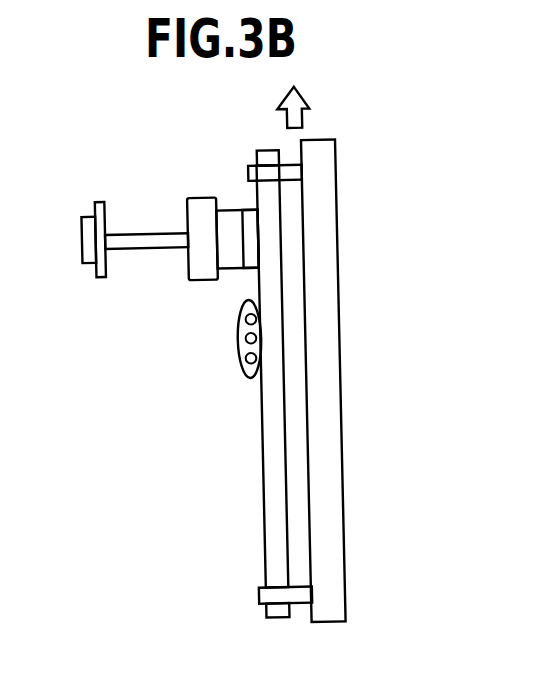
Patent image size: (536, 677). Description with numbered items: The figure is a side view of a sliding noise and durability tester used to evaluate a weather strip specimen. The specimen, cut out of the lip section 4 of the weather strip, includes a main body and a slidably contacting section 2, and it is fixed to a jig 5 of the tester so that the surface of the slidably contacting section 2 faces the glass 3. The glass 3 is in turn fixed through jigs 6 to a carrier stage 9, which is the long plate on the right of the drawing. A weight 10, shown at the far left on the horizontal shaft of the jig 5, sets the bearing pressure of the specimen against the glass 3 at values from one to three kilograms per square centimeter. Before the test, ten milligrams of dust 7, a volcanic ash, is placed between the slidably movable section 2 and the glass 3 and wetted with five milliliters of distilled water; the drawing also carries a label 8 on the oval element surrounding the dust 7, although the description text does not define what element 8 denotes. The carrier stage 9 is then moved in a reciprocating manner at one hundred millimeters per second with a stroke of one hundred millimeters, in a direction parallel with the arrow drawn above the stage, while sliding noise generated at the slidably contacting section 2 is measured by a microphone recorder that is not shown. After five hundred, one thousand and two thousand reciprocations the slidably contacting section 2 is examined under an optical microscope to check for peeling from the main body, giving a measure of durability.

The slidably contacting section 2 is at (250, 217).
The glass 3 is at (267, 200).
The lip section 4 is at (243, 268).
The jig 5 is at (198, 210).
The jigs 6 is at (275, 168).
The dust 7 is at (250, 338).
The sensor plate 8 is at (242, 370).
The carrier stage 9 is at (325, 342).
The weight 10 is at (87, 208).